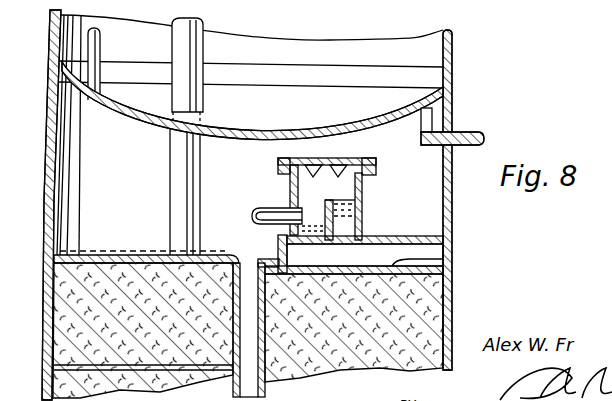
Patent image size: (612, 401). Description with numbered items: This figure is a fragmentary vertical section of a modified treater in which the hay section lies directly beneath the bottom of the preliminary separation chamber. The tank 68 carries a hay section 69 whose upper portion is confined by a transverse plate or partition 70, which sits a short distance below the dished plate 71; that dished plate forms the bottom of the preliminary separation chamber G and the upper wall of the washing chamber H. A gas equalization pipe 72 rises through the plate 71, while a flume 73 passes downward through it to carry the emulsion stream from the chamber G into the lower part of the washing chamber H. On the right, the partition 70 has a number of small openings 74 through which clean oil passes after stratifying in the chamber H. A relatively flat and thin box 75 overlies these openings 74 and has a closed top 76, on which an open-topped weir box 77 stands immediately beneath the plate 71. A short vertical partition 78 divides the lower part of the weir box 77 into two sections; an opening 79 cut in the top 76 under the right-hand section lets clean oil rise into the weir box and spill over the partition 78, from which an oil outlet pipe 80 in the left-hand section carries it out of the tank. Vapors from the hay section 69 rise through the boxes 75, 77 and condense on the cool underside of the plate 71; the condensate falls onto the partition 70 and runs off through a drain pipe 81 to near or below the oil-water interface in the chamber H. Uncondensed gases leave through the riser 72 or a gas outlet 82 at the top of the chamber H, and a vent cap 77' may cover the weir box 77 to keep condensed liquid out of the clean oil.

The washing chamber H is at (49, 160).
The preliminary separation chamber G is at (428, 46).
The tank 68 is at (447, 230).
The hay section 69 is at (447, 293).
The transverse plate or partition 70 is at (118, 255).
The dished plate 71 is at (268, 129).
The gas equalization pipe 72 is at (101, 46).
The flume 73 is at (170, 153).
The openings 74 is at (447, 266).
The box 75 is at (279, 244).
The closed top 76 is at (447, 250).
The weir box 77 is at (311, 168).
The vent cap 77' is at (388, 165).
The vertical partition 78 is at (325, 203).
The opening 79 is at (352, 236).
The oil outlet pipe 80 is at (258, 216).
The drain pipe 81 is at (266, 385).
The gas outlet 82 is at (466, 132).